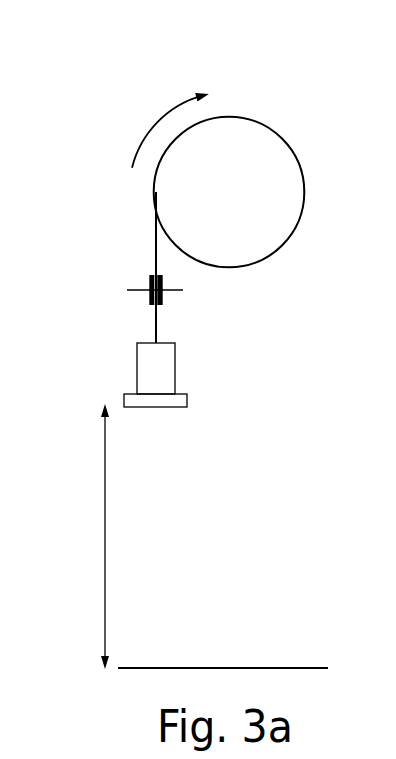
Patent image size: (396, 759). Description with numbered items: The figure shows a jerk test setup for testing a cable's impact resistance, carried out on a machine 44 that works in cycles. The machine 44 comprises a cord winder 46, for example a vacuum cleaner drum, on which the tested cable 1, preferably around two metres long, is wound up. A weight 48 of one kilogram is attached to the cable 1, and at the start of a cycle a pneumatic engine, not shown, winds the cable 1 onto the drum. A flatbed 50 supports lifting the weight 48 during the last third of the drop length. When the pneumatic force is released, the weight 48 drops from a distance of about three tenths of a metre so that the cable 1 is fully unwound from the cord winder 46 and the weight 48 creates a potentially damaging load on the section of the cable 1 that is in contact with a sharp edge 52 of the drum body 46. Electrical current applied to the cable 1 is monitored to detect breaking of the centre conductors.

The machine 44 is at (90, 153).
The cord winder 46 is at (228, 117).
The tested cable 1 is at (155, 254).
The sharp edge 52 is at (178, 291).
The weight 48 is at (137, 367).
The flatbed 50 is at (187, 398).